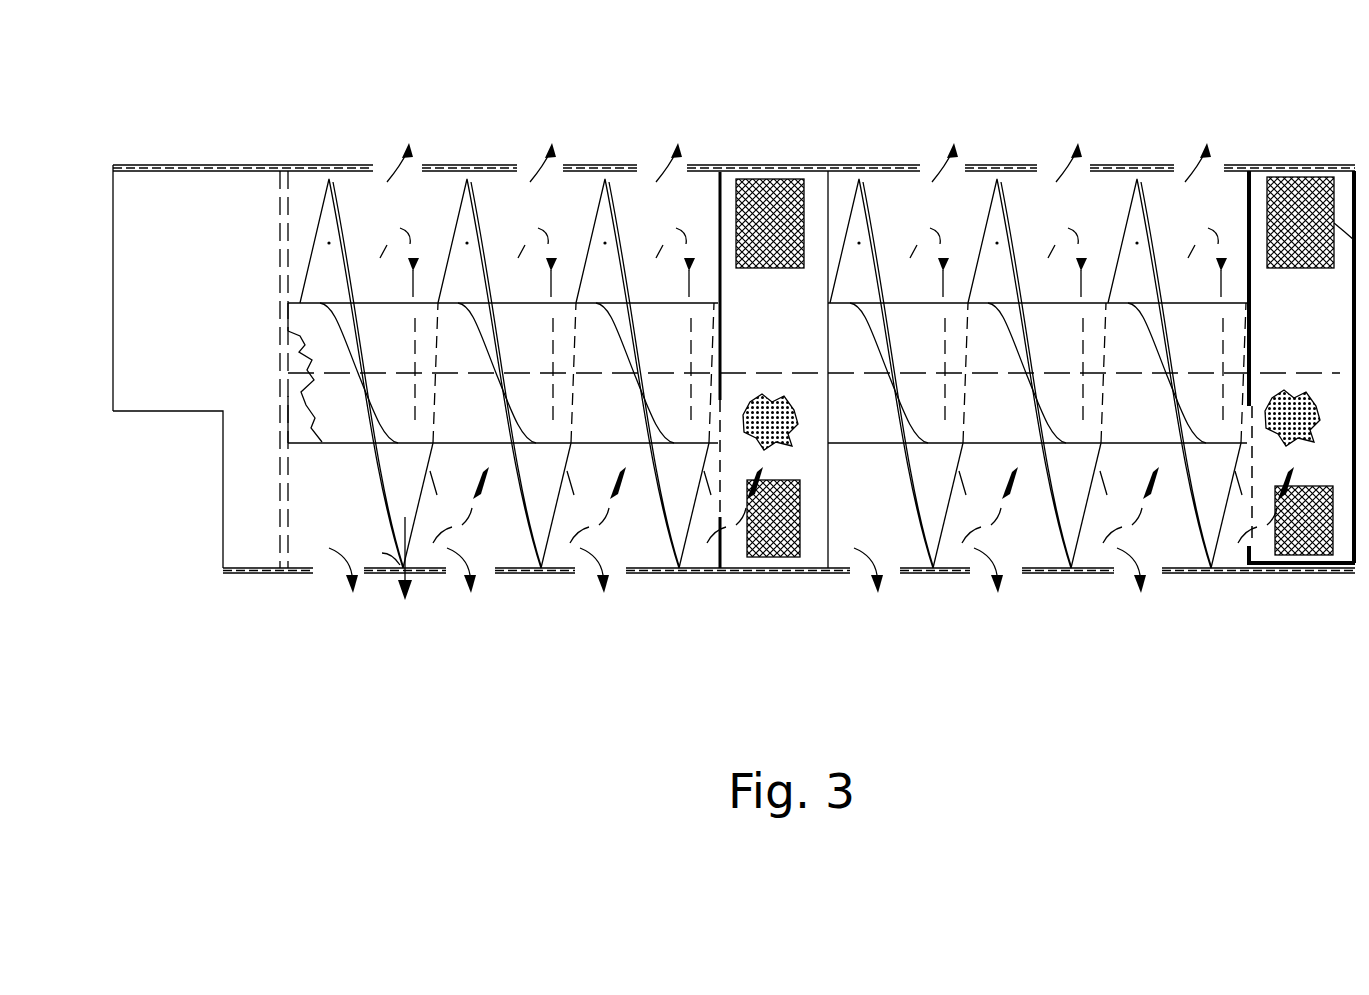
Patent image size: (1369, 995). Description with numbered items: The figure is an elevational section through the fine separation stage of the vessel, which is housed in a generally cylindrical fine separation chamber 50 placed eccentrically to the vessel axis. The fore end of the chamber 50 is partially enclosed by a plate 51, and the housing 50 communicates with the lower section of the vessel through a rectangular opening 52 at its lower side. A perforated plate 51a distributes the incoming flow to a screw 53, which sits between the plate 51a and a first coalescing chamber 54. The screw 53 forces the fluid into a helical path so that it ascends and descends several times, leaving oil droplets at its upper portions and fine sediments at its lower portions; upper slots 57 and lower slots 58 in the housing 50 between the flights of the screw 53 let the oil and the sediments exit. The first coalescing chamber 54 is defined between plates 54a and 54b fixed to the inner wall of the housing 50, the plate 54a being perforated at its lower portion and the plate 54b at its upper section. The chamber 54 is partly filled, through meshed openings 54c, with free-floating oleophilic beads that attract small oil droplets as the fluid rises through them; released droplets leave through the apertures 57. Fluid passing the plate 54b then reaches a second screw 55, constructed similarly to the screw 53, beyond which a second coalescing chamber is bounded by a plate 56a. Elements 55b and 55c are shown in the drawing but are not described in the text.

The fine separation chamber 50 is at (198, 165).
The plate 51 is at (112, 250).
The perforated plate 51a is at (278, 528).
The rectangular opening 52 is at (140, 411).
The screw 53 is at (407, 570).
The first coalescing chamber 54 is at (778, 312).
The plate 54a is at (722, 517).
The plate 54b is at (828, 222).
The meshed openings 54c is at (800, 568).
The second screw 55 is at (1020, 252).
The end wall 55b is at (1307, 180).
The outlet filter 55c is at (1267, 203).
The plate 56a is at (1302, 568).
The upper slots 57 is at (528, 165).
The lower slots 58 is at (1128, 568).